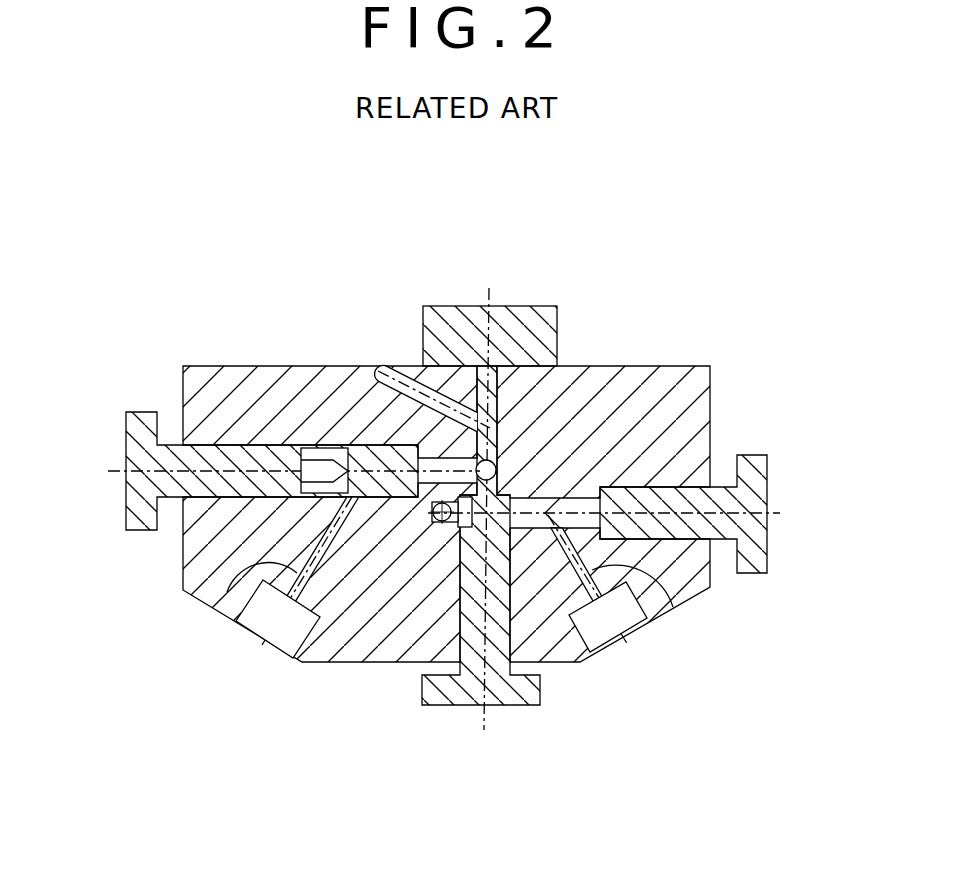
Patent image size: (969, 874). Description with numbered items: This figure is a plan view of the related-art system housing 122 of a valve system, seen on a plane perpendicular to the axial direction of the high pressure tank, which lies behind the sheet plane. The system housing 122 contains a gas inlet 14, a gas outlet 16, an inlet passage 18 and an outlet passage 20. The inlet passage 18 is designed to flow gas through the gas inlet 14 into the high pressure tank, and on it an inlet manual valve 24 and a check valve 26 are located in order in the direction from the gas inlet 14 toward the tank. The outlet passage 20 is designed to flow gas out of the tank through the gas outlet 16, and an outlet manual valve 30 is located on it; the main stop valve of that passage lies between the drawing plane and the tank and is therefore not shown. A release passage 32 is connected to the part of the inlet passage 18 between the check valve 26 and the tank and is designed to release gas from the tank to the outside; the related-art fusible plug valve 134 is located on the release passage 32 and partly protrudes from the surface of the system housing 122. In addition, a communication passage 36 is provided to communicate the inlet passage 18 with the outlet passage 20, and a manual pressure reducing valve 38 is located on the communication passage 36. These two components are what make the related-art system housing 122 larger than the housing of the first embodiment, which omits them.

The gas inlet 14 is at (247, 633).
The gas outlet 16 is at (637, 636).
The inlet passage 18 is at (447, 455).
The outlet passage 20 is at (673, 607).
The inlet manual valve 24 is at (125, 447).
The check valve 26 is at (372, 453).
The outlet manual valve 30 is at (767, 505).
The release passage 32 is at (376, 367).
The communication passage 36 is at (513, 462).
The manual pressure reducing valve 38 is at (510, 703).
The system housing 122 is at (643, 366).
The fusible plug valve 134 is at (515, 306).